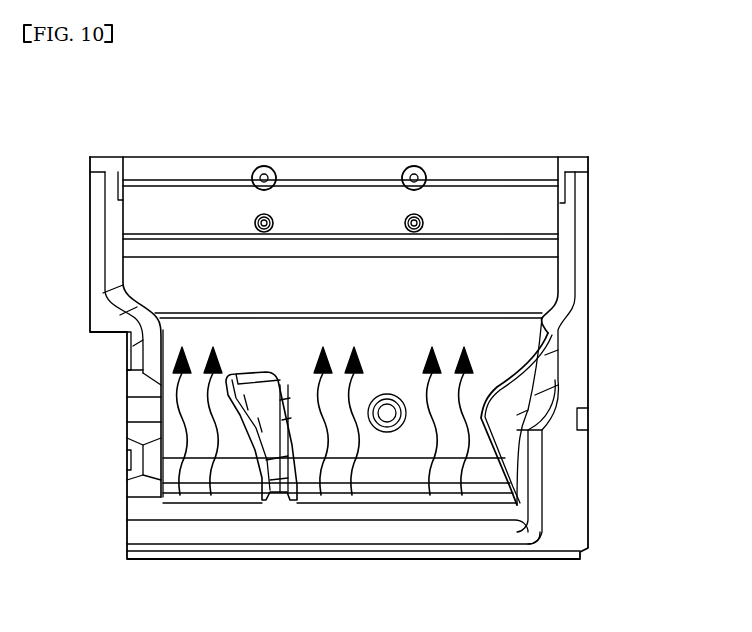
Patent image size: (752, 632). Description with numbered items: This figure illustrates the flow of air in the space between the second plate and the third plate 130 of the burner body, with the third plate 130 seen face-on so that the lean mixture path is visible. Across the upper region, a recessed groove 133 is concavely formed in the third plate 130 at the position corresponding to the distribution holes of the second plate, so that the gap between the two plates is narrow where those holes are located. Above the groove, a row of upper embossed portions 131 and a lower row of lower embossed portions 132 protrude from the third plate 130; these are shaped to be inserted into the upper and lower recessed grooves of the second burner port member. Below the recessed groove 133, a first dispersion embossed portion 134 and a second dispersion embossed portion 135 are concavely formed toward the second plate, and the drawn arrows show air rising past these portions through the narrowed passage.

The third plate 130 is at (513, 352).
The upper embossed portions 131 is at (413, 166).
The lower embossed portions 132 is at (424, 222).
The recessed groove 133 is at (535, 283).
The first dispersion embossed portion 134 is at (387, 420).
The second dispersion embossed portion 135 is at (262, 405).